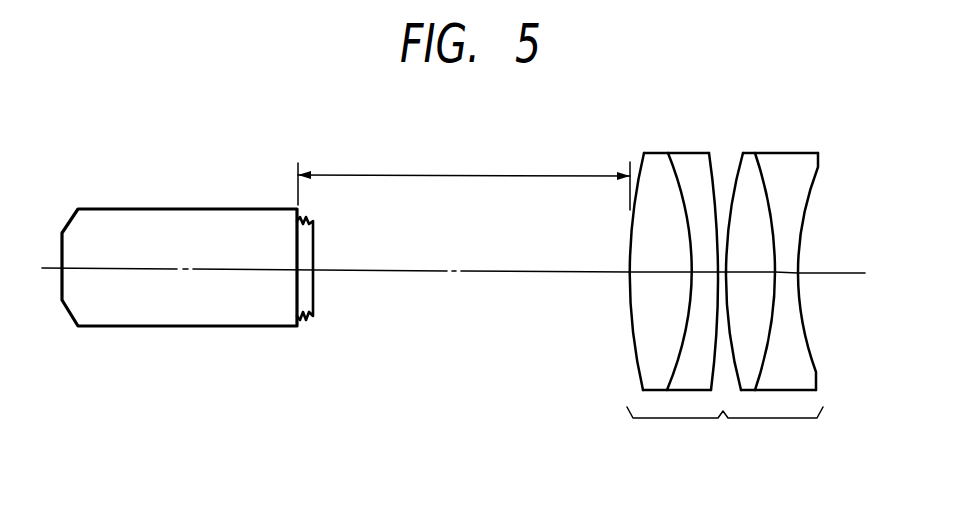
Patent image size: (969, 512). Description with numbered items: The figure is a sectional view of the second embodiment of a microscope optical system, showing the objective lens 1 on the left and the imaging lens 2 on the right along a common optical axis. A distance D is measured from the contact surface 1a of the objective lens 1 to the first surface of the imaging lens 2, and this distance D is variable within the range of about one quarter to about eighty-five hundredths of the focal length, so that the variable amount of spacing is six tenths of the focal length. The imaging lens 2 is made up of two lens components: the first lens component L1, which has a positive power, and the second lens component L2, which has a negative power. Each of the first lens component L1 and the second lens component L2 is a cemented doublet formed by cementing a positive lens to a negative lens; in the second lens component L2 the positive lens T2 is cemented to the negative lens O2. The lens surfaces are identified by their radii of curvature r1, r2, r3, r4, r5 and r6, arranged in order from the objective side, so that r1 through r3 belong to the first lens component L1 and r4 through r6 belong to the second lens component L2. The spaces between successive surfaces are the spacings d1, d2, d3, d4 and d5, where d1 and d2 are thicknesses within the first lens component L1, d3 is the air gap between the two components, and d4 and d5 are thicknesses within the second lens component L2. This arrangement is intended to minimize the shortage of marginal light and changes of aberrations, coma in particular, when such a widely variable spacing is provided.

The objective lens 1 is at (195, 306).
The contact surface 1a is at (300, 328).
The imaging lens 2 is at (709, 289).
The distance D is at (464, 178).
The first lens component L1 is at (665, 318).
The second lens component L2 is at (798, 289).
The radius of curvature r1 is at (637, 368).
The radius of curvature r2 is at (677, 367).
The radius of curvature r3 is at (715, 370).
The radius of curvature r4 is at (738, 370).
The radius of curvature r5 is at (763, 368).
The radius of curvature r6 is at (817, 353).
The space between lens surfaces d1 is at (661, 276).
The space between lens surfaces d2 is at (707, 276).
The space between lens surfaces d3 is at (727, 276).
The space between lens surfaces d4 is at (753, 271).
The space between lens surfaces d5 is at (785, 278).
The positive lens T2 is at (753, 167).
The negative lens O2 is at (811, 130).